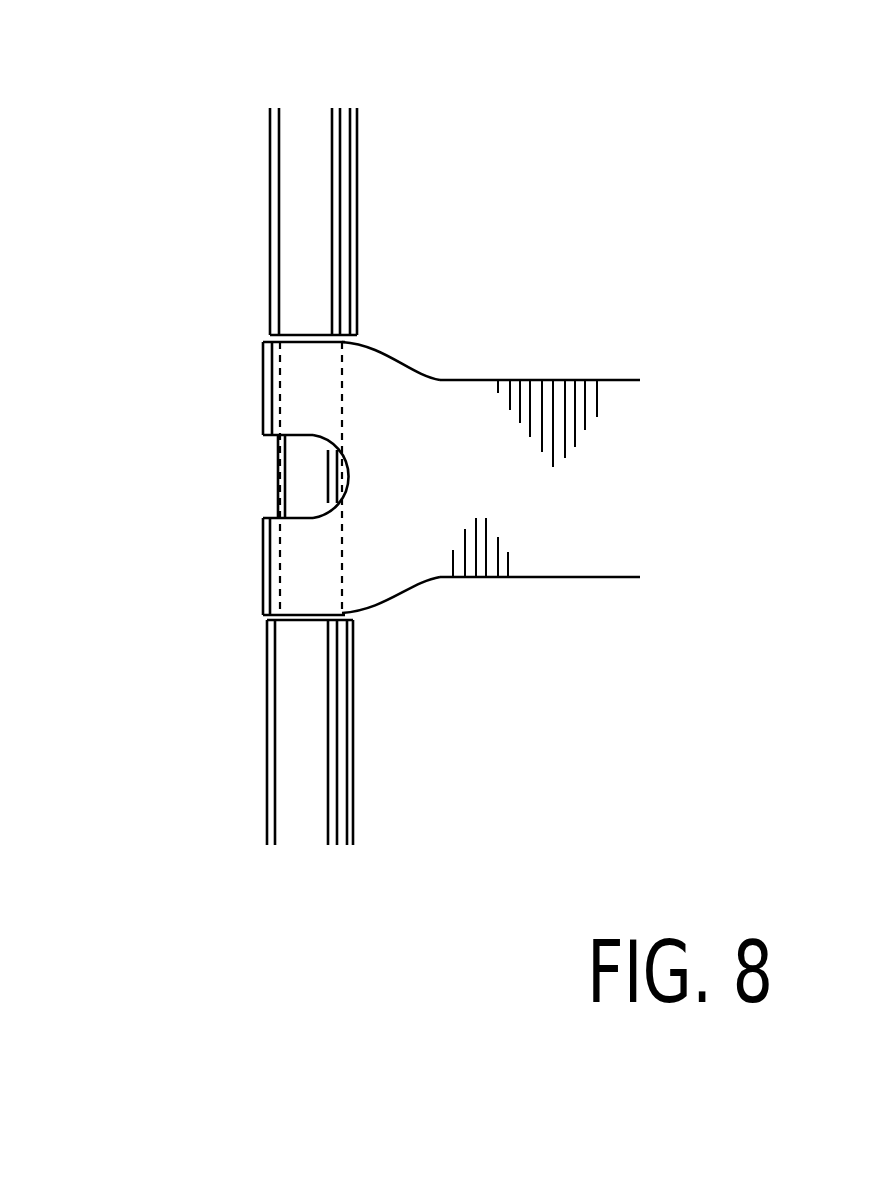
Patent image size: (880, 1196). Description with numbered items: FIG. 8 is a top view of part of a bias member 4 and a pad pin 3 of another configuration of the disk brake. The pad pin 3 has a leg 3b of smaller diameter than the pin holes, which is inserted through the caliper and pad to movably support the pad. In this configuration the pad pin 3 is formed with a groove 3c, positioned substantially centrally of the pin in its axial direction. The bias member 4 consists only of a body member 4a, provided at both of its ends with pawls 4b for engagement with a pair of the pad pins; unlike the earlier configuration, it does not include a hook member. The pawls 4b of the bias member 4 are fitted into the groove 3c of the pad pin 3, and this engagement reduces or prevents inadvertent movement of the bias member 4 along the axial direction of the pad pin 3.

The pad pin 3 is at (199, 422).
The leg 3b is at (293, 218).
The groove 3c is at (277, 475).
The bias member 4 is at (513, 520).
The body member 4a is at (532, 503).
The pawls 4b is at (358, 365).